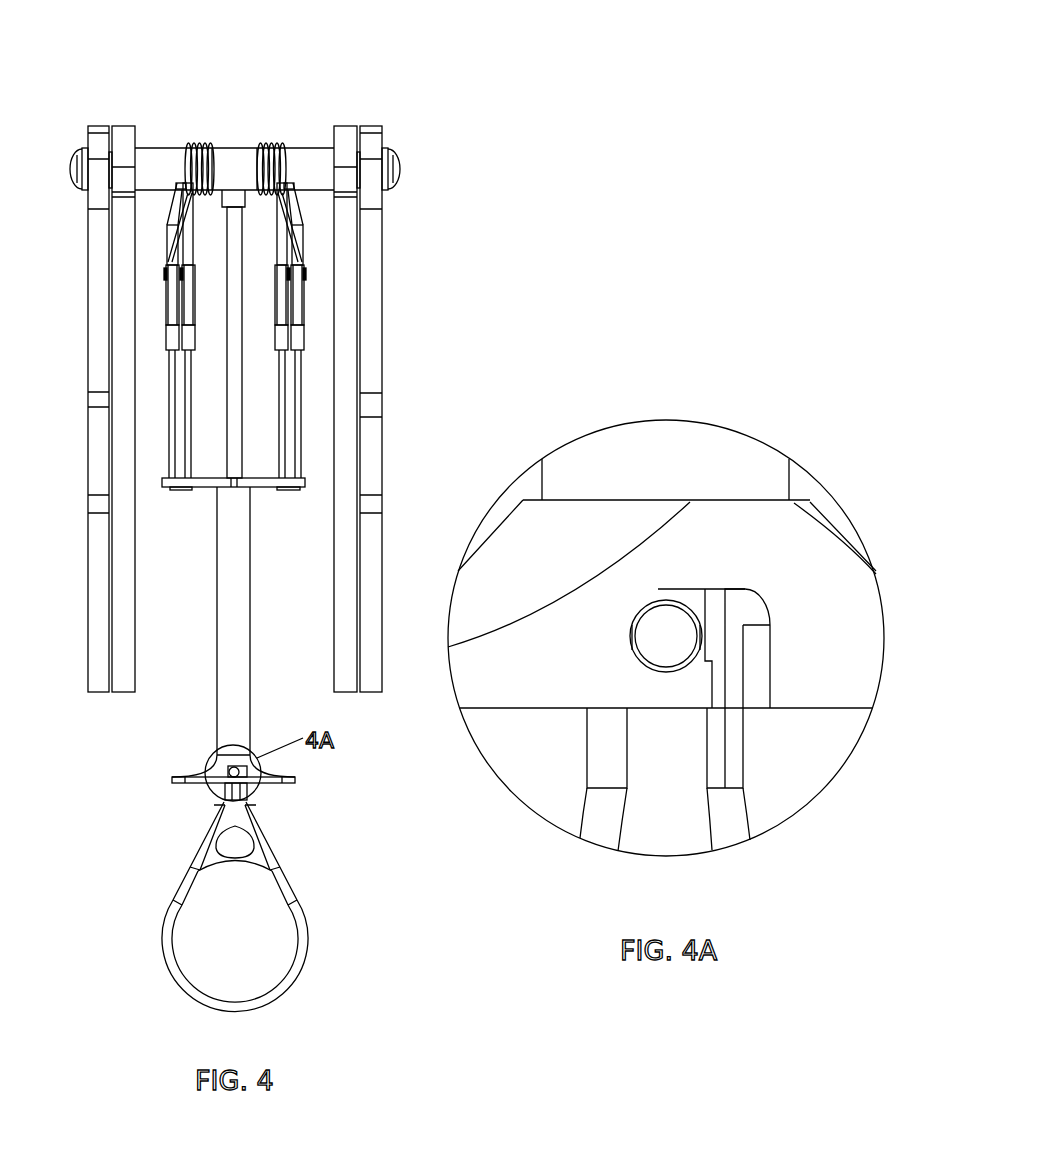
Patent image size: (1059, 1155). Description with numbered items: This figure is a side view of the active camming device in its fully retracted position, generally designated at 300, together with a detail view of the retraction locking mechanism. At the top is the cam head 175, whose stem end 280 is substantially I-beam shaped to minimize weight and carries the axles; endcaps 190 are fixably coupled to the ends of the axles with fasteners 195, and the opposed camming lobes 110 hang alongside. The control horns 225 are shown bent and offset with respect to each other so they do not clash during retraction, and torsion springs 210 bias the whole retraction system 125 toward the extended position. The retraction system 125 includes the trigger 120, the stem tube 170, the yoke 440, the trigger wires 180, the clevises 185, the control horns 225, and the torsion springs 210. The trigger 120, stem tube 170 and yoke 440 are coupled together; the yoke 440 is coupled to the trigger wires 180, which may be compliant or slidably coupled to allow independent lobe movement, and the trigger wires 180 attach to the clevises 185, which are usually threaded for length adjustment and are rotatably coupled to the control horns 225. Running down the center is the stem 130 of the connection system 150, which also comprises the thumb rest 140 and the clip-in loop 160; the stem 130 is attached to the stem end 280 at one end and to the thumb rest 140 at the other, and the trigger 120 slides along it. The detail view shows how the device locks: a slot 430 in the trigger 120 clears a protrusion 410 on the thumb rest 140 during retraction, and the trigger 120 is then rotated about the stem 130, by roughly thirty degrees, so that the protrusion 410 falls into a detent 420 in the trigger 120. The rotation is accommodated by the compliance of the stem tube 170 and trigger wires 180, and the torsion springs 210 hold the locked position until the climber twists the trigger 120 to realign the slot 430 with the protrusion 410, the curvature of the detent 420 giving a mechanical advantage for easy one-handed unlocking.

In FIG. 4, the camming lobes 110 is at (367, 237).
In FIG. 4, the trigger 120 is at (190, 778).
In FIG. 4A, the trigger 120 is at (486, 672).
In FIG. 4, the retraction system 125 is at (205, 673).
In FIG. 4, the stem 130 is at (232, 452).
In FIG. 4, the thumb rest 140 is at (262, 848).
In FIG. 4A, the thumb rest 140 is at (652, 832).
In FIG. 4, the connection system 150 is at (182, 842).
In FIG. 4, the clip-in loop 160 is at (305, 925).
In FIG. 4, the stem tube 170 is at (238, 650).
In FIG. 4A, the stem tube 170 is at (649, 458).
In FIG. 4, the cam head 175 is at (232, 140).
In FIG. 4, the trigger wires 180 is at (297, 398).
In FIG. 4, the clevises 185 is at (303, 303).
In FIG. 4, the endcaps 190 is at (383, 150).
In FIG. 4, the fasteners 195 is at (393, 162).
In FIG. 4, the torsion springs 210 is at (273, 142).
In FIG. 4, the control horns 225 is at (162, 148).
In FIG. 4, the stem end 280 is at (245, 155).
In FIG. 4, the camming device in fully retracted position 300 is at (148, 93).
In FIG. 4A, the protrusion 410 is at (664, 643).
In FIG. 4A, the detent 420 is at (660, 674).
In FIG. 4A, the slot 430 is at (752, 690).
In FIG. 4, the yoke 440 is at (206, 483).